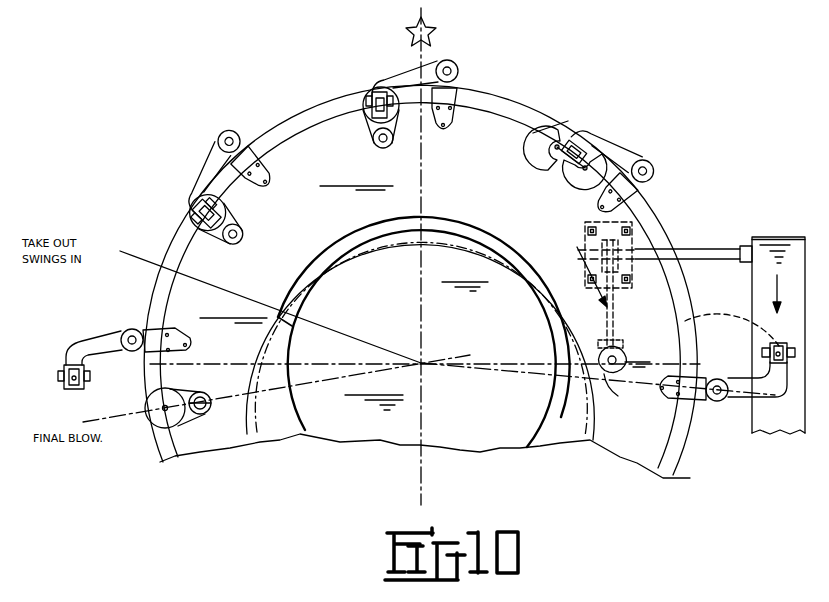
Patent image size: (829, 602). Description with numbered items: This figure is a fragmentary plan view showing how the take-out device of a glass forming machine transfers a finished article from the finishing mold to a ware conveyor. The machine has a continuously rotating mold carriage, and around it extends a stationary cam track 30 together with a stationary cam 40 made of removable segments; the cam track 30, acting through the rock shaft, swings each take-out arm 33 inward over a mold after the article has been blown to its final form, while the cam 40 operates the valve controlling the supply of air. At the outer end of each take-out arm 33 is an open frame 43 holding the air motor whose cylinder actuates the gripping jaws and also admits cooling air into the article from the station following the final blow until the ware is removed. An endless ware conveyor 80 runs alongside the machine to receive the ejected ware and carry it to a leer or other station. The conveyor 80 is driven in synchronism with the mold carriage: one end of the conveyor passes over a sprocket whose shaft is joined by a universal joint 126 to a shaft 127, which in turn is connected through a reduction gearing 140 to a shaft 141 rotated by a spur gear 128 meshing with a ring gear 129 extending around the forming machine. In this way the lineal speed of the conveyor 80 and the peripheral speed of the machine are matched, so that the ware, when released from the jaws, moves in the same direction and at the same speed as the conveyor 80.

The stationary cam track 30 is at (186, 240).
The stationary cam 40 is at (356, 240).
The take-out arm 33 is at (112, 327).
The open frame 43 is at (63, 390).
The endless ware conveyor 80 is at (757, 240).
The universal joint 126 is at (746, 245).
The shaft 127 is at (685, 252).
The spur gear 128 is at (602, 373).
The ring gear 129 is at (624, 393).
The reduction gearing 140 is at (640, 220).
The shaft 141 is at (608, 302).